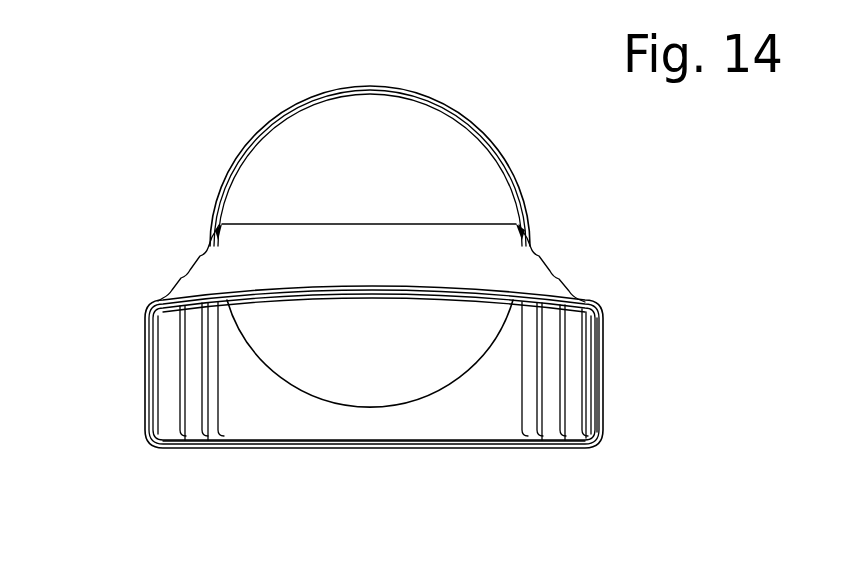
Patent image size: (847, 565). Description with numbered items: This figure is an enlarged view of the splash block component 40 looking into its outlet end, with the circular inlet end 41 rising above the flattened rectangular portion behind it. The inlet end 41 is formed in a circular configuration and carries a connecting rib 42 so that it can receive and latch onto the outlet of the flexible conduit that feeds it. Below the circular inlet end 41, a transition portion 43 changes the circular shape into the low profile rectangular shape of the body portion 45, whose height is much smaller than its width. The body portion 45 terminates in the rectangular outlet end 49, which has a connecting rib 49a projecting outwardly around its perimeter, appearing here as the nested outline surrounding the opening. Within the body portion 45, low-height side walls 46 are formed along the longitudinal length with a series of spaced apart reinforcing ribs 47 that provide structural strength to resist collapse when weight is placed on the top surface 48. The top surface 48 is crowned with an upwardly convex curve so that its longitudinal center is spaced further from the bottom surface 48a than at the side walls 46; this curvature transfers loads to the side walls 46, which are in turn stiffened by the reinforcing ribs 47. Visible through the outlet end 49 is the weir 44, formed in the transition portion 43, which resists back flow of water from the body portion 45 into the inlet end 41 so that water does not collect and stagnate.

The splash block component 40 is at (163, 90).
The inlet end 41 is at (358, 93).
The connecting rib 42 is at (512, 177).
The transition portion 43 is at (287, 411).
The weir 44 is at (373, 422).
The body portion 45 is at (143, 325).
The side walls 46 is at (603, 392).
The reinforcing ribs 47 is at (603, 347).
The top surface 48 is at (343, 285).
The bottom surface 48a is at (318, 448).
The outlet end 49 is at (483, 447).
The connecting rib 49a is at (143, 405).